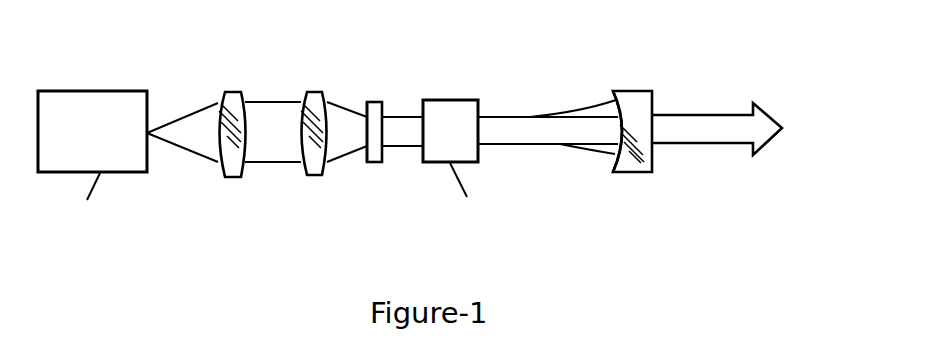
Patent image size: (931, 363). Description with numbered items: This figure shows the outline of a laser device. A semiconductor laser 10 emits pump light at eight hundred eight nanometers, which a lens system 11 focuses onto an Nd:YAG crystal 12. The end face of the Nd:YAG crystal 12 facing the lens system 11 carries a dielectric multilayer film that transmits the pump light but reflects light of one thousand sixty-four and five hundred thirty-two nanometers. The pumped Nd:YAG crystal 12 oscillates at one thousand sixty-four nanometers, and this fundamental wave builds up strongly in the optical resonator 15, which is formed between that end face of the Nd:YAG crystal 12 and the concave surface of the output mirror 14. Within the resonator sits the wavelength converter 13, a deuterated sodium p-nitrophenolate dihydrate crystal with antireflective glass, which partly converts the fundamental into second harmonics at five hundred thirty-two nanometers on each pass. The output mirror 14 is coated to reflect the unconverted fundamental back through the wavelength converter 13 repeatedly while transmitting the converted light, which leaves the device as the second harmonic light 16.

The semiconductor laser 10 is at (72, 146).
The lens system 11 is at (316, 187).
The Nd:YAG crystal 12 is at (375, 163).
The wavelength converter 13 is at (438, 146).
The output mirror 14 is at (633, 165).
The optical resonator 15 is at (370, 101).
The second harmonic light 16 is at (763, 152).